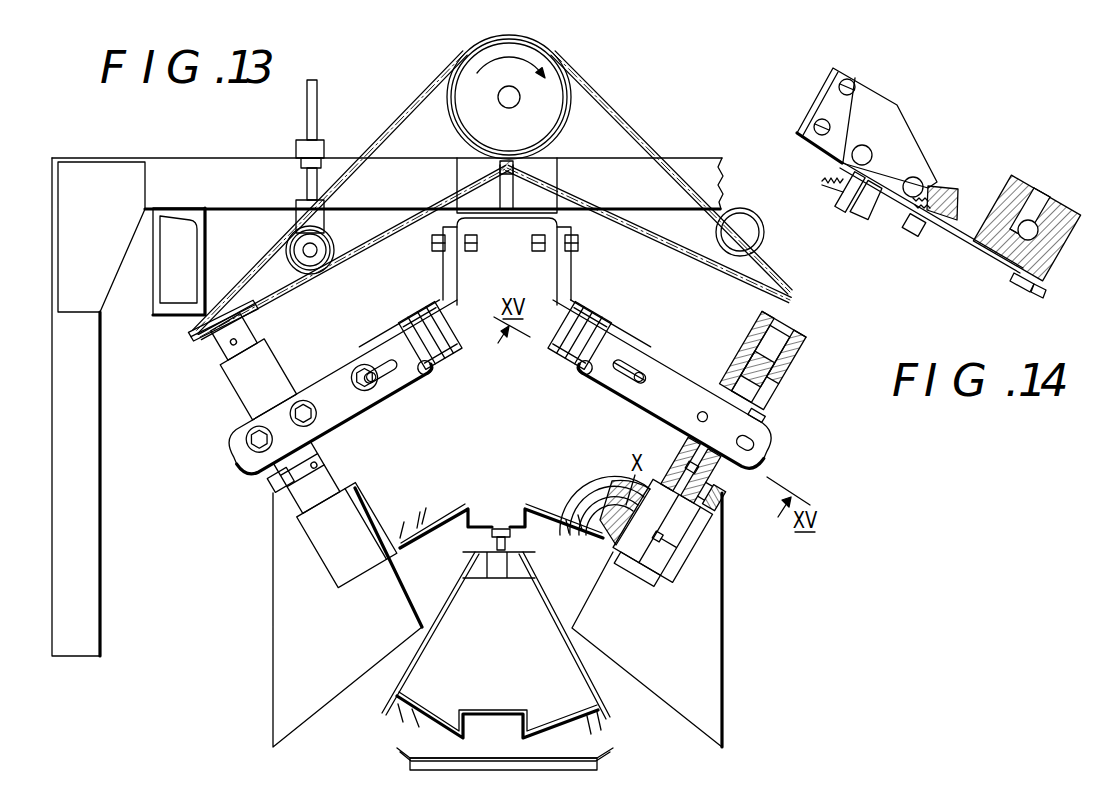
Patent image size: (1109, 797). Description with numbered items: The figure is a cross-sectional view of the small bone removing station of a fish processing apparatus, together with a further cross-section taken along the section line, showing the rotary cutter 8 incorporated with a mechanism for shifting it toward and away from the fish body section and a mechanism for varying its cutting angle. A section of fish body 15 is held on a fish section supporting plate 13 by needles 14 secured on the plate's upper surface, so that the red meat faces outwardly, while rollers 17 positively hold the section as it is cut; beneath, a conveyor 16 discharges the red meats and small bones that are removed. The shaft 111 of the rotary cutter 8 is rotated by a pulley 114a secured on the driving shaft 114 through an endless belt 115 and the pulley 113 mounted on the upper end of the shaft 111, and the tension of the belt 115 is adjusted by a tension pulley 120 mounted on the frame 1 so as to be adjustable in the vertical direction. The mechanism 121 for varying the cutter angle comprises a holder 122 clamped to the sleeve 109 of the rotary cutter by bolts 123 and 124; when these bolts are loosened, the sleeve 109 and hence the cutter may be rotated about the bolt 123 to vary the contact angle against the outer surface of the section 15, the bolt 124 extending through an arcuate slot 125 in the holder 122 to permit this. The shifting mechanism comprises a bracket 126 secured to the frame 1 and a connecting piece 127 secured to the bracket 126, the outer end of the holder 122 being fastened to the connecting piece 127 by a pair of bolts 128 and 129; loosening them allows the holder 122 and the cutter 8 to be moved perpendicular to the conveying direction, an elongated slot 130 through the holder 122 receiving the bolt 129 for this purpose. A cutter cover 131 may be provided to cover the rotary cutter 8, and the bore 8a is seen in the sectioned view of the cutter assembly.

In FIG. 13, the frame 1 is at (609, 172).
In FIG. 13, the rotary cutter 8 is at (684, 528).
In FIG. 14, the rotary cutter 8 is at (1035, 222).
In FIG. 14, the bore of guide bar 8a is at (1034, 224).
In FIG. 13, the fish section supporting plate 13 is at (453, 520).
In FIG. 13, the needles 14 is at (428, 516).
In FIG. 13, the section of fish body 15 is at (616, 500).
In FIG. 13, the conveyor 16 is at (287, 256).
In FIG. 14, the rollers 17 is at (1041, 296).
In FIG. 13, the sleeve 109 is at (776, 385).
In FIG. 13, the shaft 111 is at (736, 476).
In FIG. 13, the pulley 113 is at (800, 352).
In FIG. 13, the driving shaft 114 is at (503, 95).
In FIG. 13, the pulley 114a is at (551, 60).
In FIG. 13, the endless belt 115 is at (641, 244).
In FIG. 13, the tension pulley 120 is at (741, 208).
In FIG. 13, the mechanism for varying the angle of the rotary cutter 121 is at (762, 425).
In FIG. 13, the holder 122 is at (653, 406).
In FIG. 13, the bolt 123 is at (702, 412).
In FIG. 14, the bolt 123 is at (1025, 192).
In FIG. 13, the bolt 124 is at (761, 452).
In FIG. 14, the bolt 124 is at (1018, 292).
In FIG. 13, the arcuate slot 125 is at (603, 328).
In FIG. 13, the bracket 126 is at (560, 290).
In FIG. 14, the bracket 126 is at (882, 110).
In FIG. 13, the connecting piece 127 is at (566, 358).
In FIG. 14, the connecting piece 127 is at (947, 190).
In FIG. 13, the bolt 128 is at (582, 381).
In FIG. 14, the bolt 128 is at (822, 183).
In FIG. 13, the bolt 129 is at (627, 386).
In FIG. 14, the bolt 129 is at (910, 232).
In FIG. 13, the elongated slot 130 is at (627, 364).
In FIG. 14, the elongated slot 130 is at (897, 200).
In FIG. 13, the cutter cover 131 is at (705, 688).